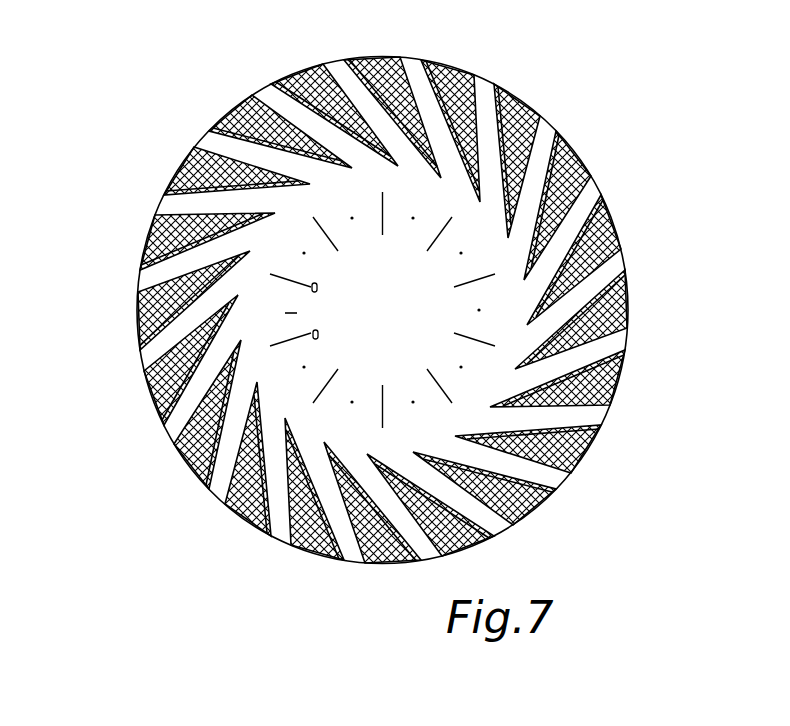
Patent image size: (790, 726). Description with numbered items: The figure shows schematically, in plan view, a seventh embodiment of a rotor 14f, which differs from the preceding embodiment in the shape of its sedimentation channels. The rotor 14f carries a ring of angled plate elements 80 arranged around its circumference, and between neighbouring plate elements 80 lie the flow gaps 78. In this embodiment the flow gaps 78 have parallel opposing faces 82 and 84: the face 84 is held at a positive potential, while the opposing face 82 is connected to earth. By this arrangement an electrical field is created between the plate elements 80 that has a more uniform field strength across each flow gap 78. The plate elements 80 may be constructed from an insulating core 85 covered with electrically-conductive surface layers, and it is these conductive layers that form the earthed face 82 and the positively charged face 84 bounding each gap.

The rotor 14f is at (589, 113).
The angled plate elements 80 is at (578, 156).
The flow gaps 78 is at (583, 203).
The opposing face 82 is at (257, 333).
The face 84 is at (176, 428).
The insulating core 85 is at (198, 448).